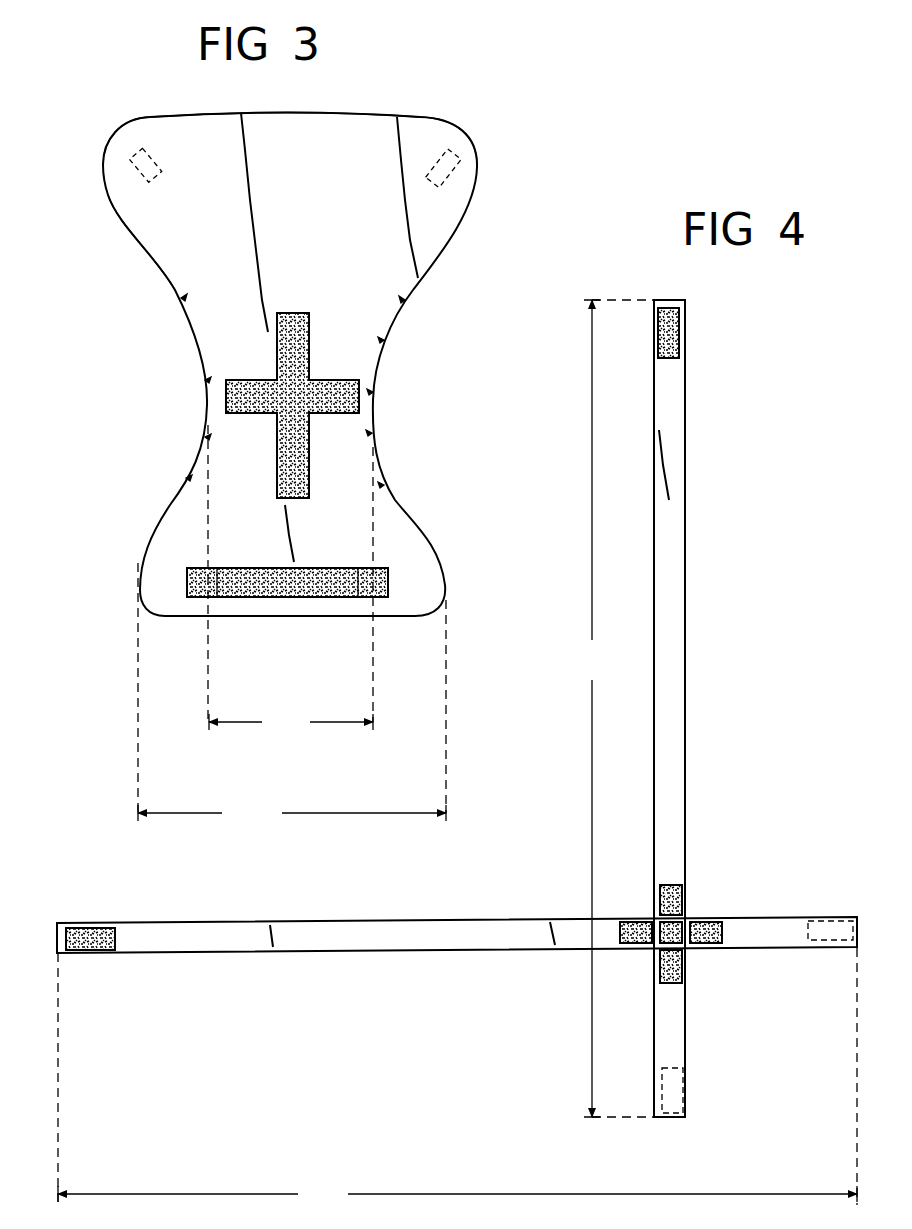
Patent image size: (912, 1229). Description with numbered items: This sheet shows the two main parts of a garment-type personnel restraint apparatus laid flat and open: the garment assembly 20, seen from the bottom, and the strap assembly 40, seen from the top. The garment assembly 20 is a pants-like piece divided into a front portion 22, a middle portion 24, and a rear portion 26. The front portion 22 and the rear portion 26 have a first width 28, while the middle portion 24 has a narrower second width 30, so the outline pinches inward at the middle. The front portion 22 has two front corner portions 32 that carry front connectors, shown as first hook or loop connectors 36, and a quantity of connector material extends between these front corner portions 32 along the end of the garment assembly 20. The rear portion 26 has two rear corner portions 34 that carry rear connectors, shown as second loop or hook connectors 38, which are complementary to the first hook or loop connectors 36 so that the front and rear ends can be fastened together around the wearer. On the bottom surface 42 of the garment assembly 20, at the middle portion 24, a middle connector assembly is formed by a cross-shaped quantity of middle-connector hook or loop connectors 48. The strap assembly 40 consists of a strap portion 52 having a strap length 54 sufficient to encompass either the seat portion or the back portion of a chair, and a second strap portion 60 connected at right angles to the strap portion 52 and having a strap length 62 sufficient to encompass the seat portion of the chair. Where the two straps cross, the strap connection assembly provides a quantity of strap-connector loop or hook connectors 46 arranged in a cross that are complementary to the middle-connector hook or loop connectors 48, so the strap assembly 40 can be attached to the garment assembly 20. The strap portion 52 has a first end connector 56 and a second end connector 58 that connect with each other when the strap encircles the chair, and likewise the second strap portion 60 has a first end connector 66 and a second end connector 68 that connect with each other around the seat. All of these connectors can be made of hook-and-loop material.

In FIG. 3, the garment assembly 20 is at (400, 349).
In FIG. 3, the front portion 22 is at (288, 605).
In FIG. 3, the middle portion 24 is at (237, 353).
In FIG. 3, the rear portion 26 is at (320, 130).
In FIG. 3, the first width 28 is at (292, 698).
In FIG. 3, the second width 30 is at (290, 585).
In FIG. 3, the front corner portions 32 is at (185, 590).
In FIG. 3, the rear corner portions 34 is at (160, 137).
In FIG. 3, the first hook or loop connectors 36 is at (232, 580).
In FIG. 3, the second loop or hook connectors 38 is at (143, 163).
In FIG. 4, the strap assembly 40 is at (457, 708).
In FIG. 3, the bottom surface 42 is at (236, 412).
In FIG. 4, the strap-connector loop or hook connectors 46 is at (633, 930).
In FIG. 3, the middle-connector hook or loop connectors 48 is at (285, 400).
In FIG. 4, the strap portion 52 is at (675, 700).
In FIG. 4, the strap length 54 is at (611, 708).
In FIG. 4, the first end connector 56 is at (673, 333).
In FIG. 4, the second end connector 58 is at (673, 1095).
In FIG. 4, the second strap portion 60 is at (378, 938).
In FIG. 4, the strap length 62 is at (457, 1080).
In FIG. 4, the first end connector 66 is at (105, 932).
In FIG. 4, the second end connector 68 is at (828, 930).